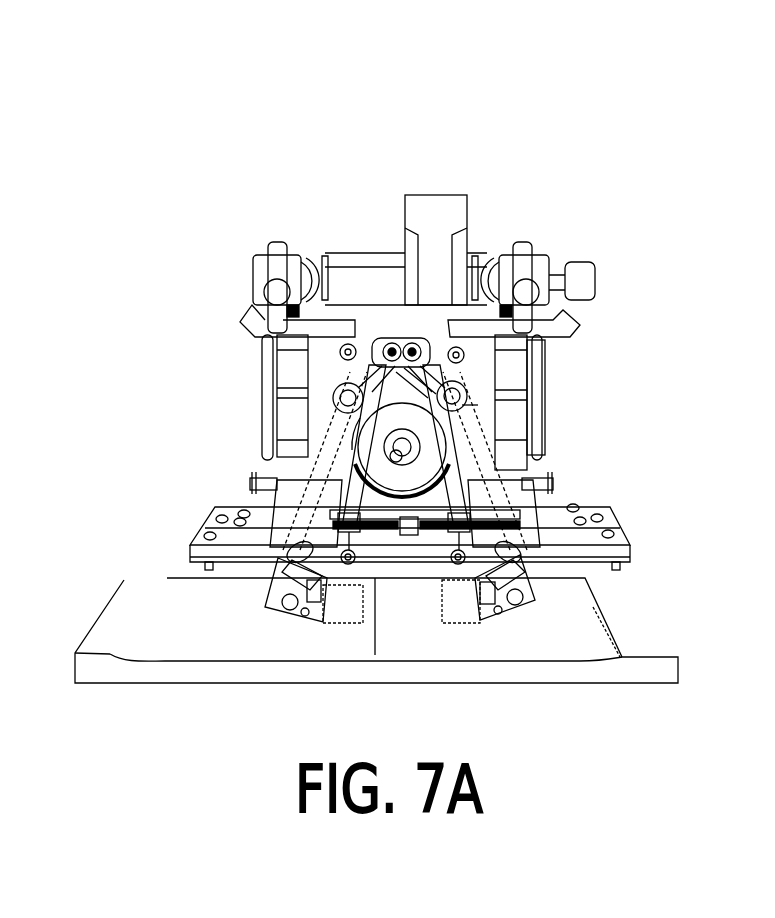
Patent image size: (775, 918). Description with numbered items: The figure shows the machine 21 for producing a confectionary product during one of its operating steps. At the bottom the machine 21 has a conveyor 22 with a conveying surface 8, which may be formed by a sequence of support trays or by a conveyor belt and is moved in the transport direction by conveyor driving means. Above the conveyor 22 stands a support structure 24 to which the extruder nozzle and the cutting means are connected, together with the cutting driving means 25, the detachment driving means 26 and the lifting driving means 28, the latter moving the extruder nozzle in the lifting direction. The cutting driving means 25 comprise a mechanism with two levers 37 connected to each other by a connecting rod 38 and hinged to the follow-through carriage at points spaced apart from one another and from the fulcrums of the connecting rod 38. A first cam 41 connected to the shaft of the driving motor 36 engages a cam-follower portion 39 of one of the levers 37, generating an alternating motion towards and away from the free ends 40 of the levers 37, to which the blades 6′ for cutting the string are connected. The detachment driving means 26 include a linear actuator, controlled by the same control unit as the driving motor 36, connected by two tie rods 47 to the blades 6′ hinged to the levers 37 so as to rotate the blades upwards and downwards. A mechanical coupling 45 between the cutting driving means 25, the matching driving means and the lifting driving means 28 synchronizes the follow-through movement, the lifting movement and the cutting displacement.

The machine 21 is at (556, 214).
The detachment driving means 26 is at (388, 343).
The connecting rod 38 is at (430, 385).
The driving motor 36 is at (465, 398).
The lifting driving means 28 is at (340, 391).
The cutting driving means 25 is at (470, 400).
The mechanical coupling 45 is at (385, 438).
The cam-follower portion 39 is at (435, 440).
The levers 37 is at (478, 455).
The tie rods 47 is at (525, 493).
The support structure 24 is at (618, 523).
The free ends 40 is at (540, 530).
The first cam 41 is at (413, 512).
The blade 6′ is at (343, 612).
The conveying surface 8 is at (565, 635).
The conveyor 22 is at (657, 672).